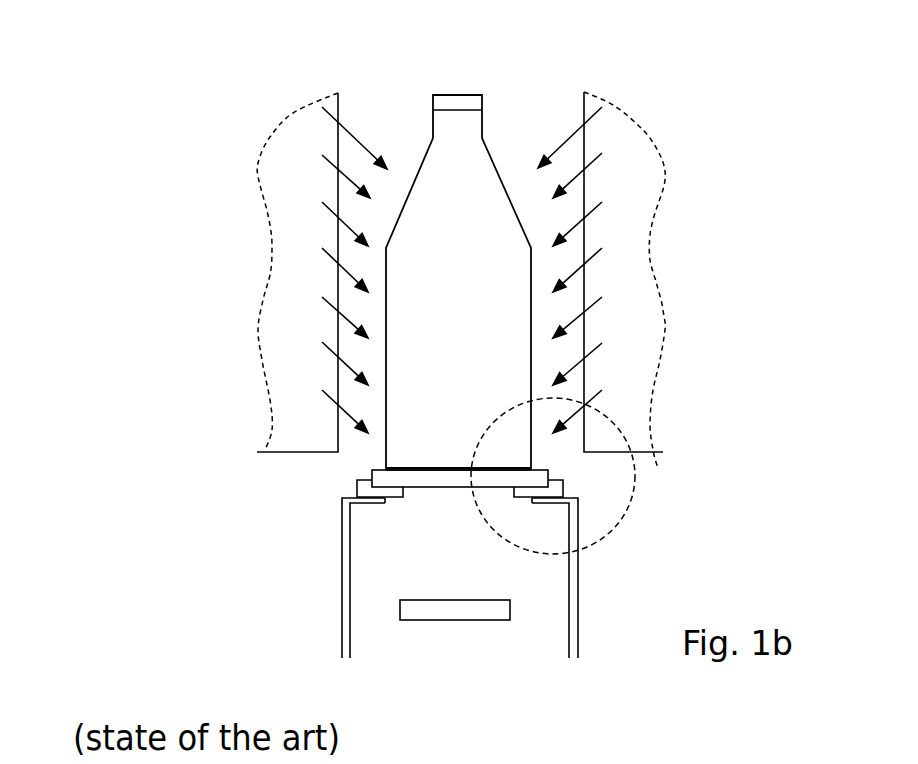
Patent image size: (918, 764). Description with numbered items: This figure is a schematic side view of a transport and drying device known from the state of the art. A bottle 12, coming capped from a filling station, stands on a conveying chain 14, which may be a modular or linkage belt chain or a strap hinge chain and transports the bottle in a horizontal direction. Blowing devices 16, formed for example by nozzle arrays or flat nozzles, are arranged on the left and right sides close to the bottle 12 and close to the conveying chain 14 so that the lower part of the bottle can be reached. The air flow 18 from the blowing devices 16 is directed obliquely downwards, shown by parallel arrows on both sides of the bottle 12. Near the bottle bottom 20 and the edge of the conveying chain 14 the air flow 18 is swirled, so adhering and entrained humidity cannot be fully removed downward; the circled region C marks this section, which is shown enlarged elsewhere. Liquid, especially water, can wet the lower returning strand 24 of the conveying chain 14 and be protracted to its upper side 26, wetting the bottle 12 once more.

The bottle 12 is at (483, 112).
The conveying chain 14 is at (530, 482).
The blowing device 16 is at (302, 303).
The air flow 18 is at (338, 222).
The bottle bottom 20 is at (368, 433).
The lower returning strand 24 is at (433, 612).
The upper side 26 is at (530, 469).
The detail region C is at (627, 530).